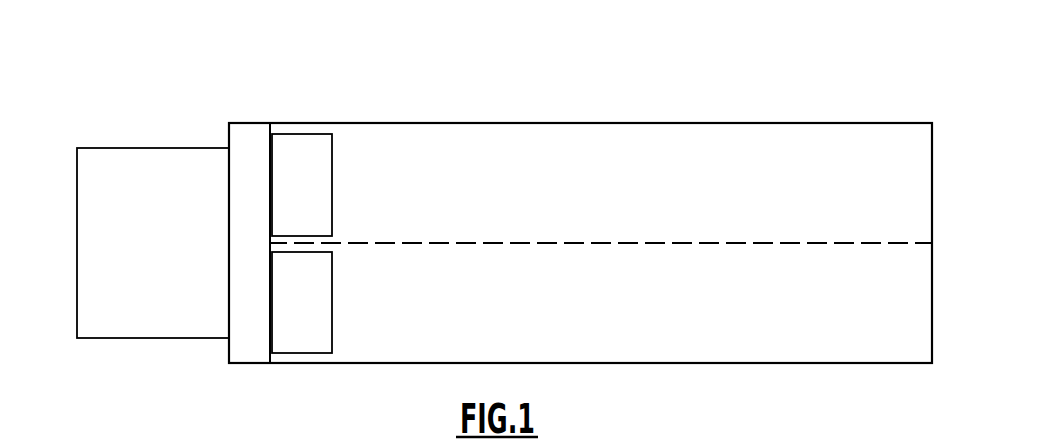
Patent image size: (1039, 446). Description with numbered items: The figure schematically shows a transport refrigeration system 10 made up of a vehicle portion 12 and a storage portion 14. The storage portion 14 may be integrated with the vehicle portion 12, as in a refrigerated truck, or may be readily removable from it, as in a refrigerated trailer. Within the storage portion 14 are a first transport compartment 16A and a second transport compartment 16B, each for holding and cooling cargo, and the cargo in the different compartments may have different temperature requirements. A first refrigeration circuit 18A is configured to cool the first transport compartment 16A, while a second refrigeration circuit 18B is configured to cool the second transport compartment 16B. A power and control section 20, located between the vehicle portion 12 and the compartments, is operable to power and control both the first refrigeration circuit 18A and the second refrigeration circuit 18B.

The transport refrigeration system 10 is at (744, 79).
The vehicle portion 12 is at (117, 165).
The storage portion 14 is at (809, 109).
The first transport compartment 16A is at (907, 181).
The second transport compartment 16B is at (907, 296).
The first refrigeration circuit 18A is at (323, 196).
The second refrigeration circuit 18B is at (323, 300).
The power and control section 20 is at (252, 137).